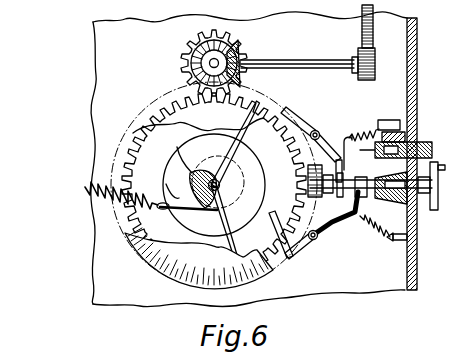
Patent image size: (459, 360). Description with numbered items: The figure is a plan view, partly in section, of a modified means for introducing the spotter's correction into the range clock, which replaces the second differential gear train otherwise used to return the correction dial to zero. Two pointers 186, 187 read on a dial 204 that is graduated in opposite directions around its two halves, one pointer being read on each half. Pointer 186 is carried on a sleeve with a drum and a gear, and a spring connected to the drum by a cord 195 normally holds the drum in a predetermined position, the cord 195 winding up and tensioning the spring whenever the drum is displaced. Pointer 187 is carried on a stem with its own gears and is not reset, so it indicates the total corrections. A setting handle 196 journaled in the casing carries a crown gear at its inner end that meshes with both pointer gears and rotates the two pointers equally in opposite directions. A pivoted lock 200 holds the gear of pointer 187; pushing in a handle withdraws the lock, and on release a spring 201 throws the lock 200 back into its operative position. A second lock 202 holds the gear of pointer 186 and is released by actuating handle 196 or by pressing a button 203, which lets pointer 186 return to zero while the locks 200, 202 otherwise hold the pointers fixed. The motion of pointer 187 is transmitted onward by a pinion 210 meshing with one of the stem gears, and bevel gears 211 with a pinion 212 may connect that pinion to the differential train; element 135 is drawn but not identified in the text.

The worm gear 135 is at (361, 27).
The pointer 186 is at (243, 139).
The pointer 187 is at (227, 188).
The cord 195 is at (190, 177).
The setting handle 196 is at (417, 237).
The pivoted lock 200 is at (313, 232).
The spring 201 is at (374, 237).
The second lock 202 is at (300, 110).
The button 203 is at (437, 142).
The dial 204 is at (158, 277).
The pinion 210 is at (235, 37).
The bevel gears 211 is at (243, 47).
The pinion 212 is at (362, 81).